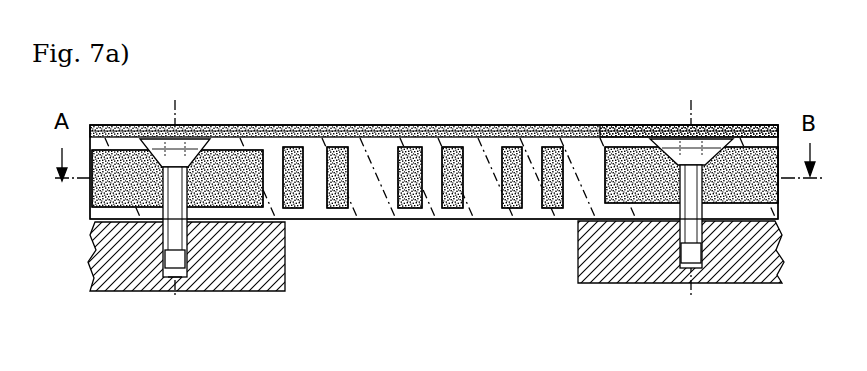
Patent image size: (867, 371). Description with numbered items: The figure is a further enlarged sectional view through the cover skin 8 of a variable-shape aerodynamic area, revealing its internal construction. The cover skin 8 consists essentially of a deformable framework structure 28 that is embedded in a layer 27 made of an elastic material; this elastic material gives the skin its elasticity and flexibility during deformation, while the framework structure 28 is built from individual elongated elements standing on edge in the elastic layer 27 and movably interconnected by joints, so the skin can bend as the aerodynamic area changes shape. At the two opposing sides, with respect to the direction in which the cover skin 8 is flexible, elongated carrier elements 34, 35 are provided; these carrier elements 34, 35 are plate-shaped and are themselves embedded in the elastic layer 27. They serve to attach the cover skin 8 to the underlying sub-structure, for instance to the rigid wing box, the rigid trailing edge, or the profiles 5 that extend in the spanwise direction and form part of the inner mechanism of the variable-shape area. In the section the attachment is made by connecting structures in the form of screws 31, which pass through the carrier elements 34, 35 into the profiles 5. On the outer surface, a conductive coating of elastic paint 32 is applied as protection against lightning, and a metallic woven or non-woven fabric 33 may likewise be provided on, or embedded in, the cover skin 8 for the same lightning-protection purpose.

The profiles 5 is at (251, 283).
The cover skin 8 is at (402, 197).
The elastic layer 27 is at (381, 156).
The framework structure 28 is at (337, 157).
The screws 31 is at (199, 140).
The elastic paint 32 is at (500, 125).
The metallic woven fabric or metallic non-woven fabric 33 is at (630, 126).
The carrier element 34 is at (153, 194).
The carrier element 35 is at (633, 192).